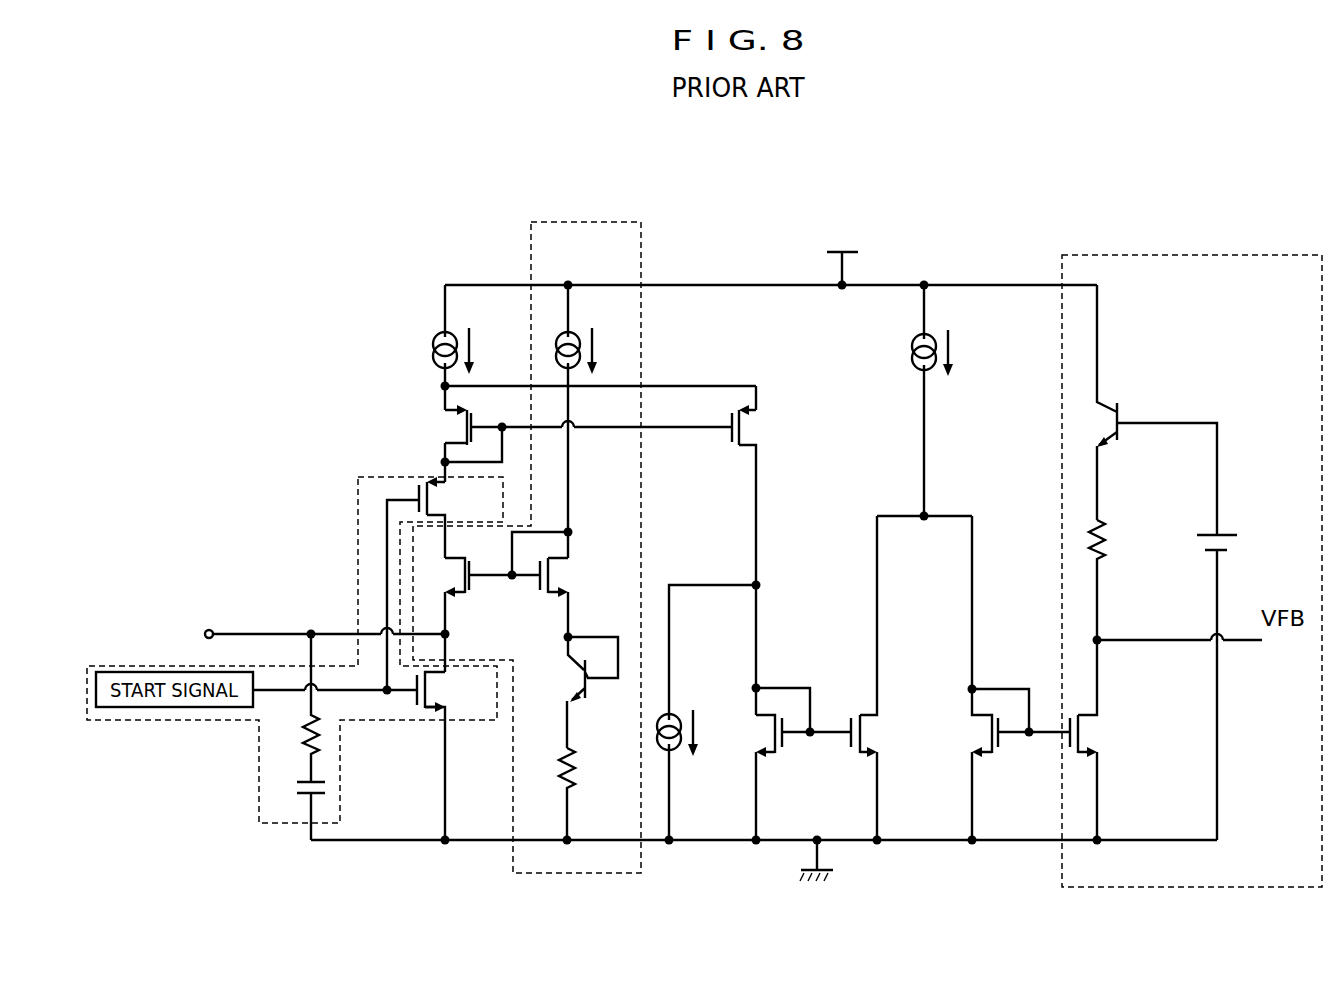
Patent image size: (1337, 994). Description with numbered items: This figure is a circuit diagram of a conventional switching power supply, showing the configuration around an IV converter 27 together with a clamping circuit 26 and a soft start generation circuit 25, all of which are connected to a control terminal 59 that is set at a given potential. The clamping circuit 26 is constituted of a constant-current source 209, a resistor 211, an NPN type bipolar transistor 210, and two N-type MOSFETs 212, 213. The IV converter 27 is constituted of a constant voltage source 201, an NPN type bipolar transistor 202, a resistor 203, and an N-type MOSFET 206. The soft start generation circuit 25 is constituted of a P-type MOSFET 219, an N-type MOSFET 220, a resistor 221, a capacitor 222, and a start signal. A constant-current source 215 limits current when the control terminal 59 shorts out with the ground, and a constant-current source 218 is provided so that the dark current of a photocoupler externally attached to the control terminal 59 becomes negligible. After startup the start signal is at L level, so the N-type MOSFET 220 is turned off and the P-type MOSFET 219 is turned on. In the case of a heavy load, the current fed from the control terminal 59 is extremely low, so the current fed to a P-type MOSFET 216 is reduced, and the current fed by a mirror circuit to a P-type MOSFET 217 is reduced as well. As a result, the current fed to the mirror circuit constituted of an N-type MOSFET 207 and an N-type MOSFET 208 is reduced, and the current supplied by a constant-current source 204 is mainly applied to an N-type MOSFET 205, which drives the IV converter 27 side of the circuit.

The soft start generation circuit 25 is at (358, 600).
The clamping circuit 26 is at (642, 272).
The IV converter 27 is at (1190, 255).
The control terminal 59 is at (205, 631).
The constant voltage source 201 is at (1236, 527).
The NPN type bipolar transistor 202 is at (1120, 408).
The resistor 203 is at (1104, 529).
The constant-current source 204 is at (912, 352).
The N-type MOSFET 205 is at (985, 740).
The N-type MOSFET 206 is at (1088, 735).
The N-type MOSFET 207 is at (770, 731).
The N-type MOSFET 208 is at (872, 725).
The constant-current source 209 is at (574, 340).
The NPN type bipolar transistor 210 is at (578, 672).
The resistor 211 is at (572, 760).
The N-type MOSFET 212 is at (556, 581).
The N-type MOSFET 213 is at (470, 579).
The constant-current source 215 is at (433, 350).
The P-type MOSFET 216 is at (462, 429).
The P-type MOSFET 217 is at (745, 428).
The constant-current source 218 is at (673, 722).
The P-type MOSFET 219 is at (430, 501).
The N-type MOSFET 220 is at (433, 688).
The resistor 221 is at (308, 742).
The capacitor 222 is at (322, 781).